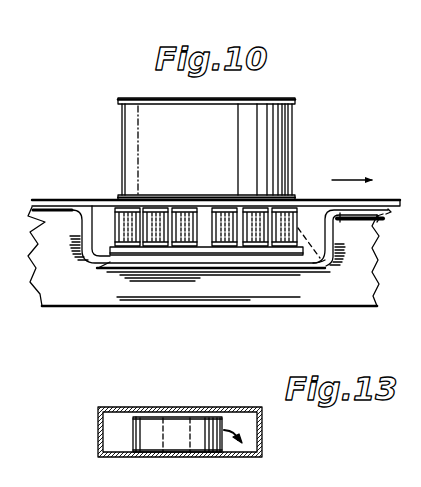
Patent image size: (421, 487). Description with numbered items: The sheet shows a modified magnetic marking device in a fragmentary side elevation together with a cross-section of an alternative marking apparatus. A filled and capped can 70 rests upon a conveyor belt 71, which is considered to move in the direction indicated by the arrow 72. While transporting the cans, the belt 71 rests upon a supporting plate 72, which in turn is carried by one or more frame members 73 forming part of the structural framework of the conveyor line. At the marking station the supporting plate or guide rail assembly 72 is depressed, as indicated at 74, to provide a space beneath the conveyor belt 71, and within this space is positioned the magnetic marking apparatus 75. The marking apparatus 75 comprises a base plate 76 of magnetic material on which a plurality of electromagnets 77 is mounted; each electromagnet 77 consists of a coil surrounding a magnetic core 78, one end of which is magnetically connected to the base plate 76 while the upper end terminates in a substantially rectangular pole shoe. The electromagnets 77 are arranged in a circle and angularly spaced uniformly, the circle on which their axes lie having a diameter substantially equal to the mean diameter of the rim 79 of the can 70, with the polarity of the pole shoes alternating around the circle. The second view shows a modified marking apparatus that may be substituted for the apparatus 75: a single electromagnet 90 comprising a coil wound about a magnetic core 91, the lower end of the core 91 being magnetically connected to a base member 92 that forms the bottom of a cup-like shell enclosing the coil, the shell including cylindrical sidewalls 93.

In FIG. 10, the filled and capped can 70 is at (292, 153).
In FIG. 10, the conveyor belt 71 is at (382, 198).
In FIG. 10, the supporting plate 72 is at (60, 207).
In FIG. 10, the frame member 73 is at (355, 286).
In FIG. 10, the depression 74 is at (105, 268).
In FIG. 10, the magnetic marking apparatus 75 is at (97, 216).
In FIG. 10, the base plate 76 is at (230, 255).
In FIG. 10, the electromagnet 77 is at (298, 215).
In FIG. 10, the magnetic core 78 is at (327, 263).
In FIG. 10, the rim 79 is at (125, 190).
In FIG. 13, the electromagnet 90 is at (156, 452).
In FIG. 13, the magnetic core 91 is at (196, 452).
In FIG. 13, the base member 92 is at (230, 457).
In FIG. 13, the cylindrical sidewalls 93 is at (262, 431).